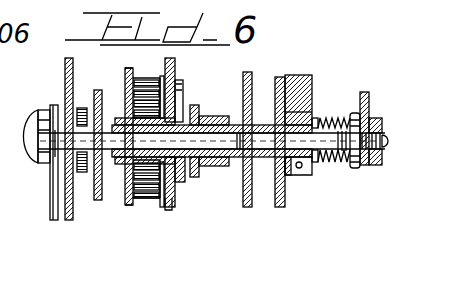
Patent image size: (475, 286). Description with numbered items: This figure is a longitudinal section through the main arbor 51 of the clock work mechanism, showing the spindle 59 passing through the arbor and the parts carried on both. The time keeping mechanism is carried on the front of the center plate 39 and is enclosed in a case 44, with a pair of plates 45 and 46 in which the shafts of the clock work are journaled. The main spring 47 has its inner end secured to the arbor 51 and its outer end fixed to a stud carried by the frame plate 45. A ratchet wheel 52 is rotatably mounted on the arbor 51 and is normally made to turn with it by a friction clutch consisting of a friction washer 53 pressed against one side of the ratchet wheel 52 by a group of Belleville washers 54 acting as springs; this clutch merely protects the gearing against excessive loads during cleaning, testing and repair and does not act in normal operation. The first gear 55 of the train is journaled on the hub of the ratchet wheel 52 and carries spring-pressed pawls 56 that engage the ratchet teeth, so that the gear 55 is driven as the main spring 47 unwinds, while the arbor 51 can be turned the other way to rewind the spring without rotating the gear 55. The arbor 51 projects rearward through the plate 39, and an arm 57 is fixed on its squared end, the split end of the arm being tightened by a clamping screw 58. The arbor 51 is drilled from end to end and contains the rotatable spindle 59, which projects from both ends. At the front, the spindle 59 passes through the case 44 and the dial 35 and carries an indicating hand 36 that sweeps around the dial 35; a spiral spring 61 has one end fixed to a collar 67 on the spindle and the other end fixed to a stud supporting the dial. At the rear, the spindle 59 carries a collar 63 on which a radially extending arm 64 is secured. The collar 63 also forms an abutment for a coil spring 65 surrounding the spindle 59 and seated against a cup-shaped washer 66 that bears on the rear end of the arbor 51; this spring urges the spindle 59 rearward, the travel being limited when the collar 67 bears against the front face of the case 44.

The dial 35 is at (66, 85).
The indicating hand 36 is at (53, 213).
The center plate 39 is at (280, 208).
The case 44 is at (127, 202).
The plate 45 is at (128, 207).
The plate 46 is at (247, 208).
The main spring 47 is at (144, 193).
The arbor 51 is at (232, 158).
The ratchet wheel 52 is at (172, 113).
The friction washer 53 is at (180, 183).
The Belleville washers 54 is at (197, 167).
The first gear 55 is at (165, 210).
The spring-pressed pawls 56 is at (182, 88).
The arm 57 is at (310, 112).
The clamping screw 58 is at (299, 168).
The spindle 59 is at (238, 146).
The spiral spring 61 is at (81, 172).
The collar 63 is at (355, 170).
The arm 64 is at (372, 84).
The coil spring 65 is at (333, 120).
The cup-shaped washer 66 is at (320, 120).
The collar 67 is at (88, 132).